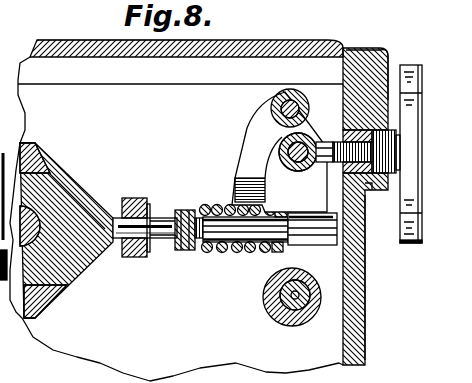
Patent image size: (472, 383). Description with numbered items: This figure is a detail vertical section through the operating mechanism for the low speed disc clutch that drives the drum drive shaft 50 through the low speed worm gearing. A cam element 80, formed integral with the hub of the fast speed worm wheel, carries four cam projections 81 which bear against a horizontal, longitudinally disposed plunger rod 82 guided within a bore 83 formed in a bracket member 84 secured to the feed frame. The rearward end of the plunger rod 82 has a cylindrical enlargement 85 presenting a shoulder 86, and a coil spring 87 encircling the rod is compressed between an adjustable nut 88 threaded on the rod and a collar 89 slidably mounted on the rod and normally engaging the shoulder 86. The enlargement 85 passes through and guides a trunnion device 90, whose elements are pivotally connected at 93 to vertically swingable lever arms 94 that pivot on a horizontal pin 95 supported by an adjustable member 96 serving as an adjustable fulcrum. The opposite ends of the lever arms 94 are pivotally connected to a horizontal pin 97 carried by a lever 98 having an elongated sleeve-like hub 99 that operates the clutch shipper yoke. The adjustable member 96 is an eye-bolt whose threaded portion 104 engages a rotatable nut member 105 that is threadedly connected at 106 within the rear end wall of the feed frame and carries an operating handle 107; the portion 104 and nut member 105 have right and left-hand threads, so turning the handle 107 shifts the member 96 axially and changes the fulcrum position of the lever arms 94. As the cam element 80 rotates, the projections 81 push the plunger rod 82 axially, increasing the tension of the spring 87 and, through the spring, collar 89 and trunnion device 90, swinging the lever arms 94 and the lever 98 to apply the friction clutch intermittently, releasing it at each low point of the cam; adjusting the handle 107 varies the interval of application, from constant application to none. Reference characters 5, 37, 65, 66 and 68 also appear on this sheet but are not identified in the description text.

The casing wall 5 is at (74, 40).
The adjacent member 37 is at (10, 167).
The drum drive shaft 50 is at (66, 220).
The valve seat 65 is at (62, 200).
The valve body lower part 66 is at (62, 280).
The pin 68 is at (281, 317).
The cam element 80 is at (40, 190).
The cam projections 81 is at (102, 248).
The plunger rod 82 is at (162, 242).
The bore 83 is at (125, 201).
The bracket member 84 is at (148, 193).
The cylindrical enlargement 85 is at (330, 248).
The shoulder 86 is at (280, 248).
The coil spring 87 is at (212, 250).
The nut 88 is at (185, 210).
The collar 89 is at (223, 252).
The trunnion device 90 is at (365, 266).
The pivotal connection 93 is at (350, 230).
The lever arms 94 is at (312, 124).
The horizontal pin 95 is at (307, 148).
The adjustable member 96 is at (303, 165).
The horizontal pin 97 is at (288, 104).
The lever 98 is at (250, 150).
The sleeve-like hub 99 is at (286, 304).
The threaded portion 104 is at (388, 80).
The nut member 105 is at (364, 191).
The threaded connection 106 is at (362, 97).
The operating handle 107 is at (412, 243).